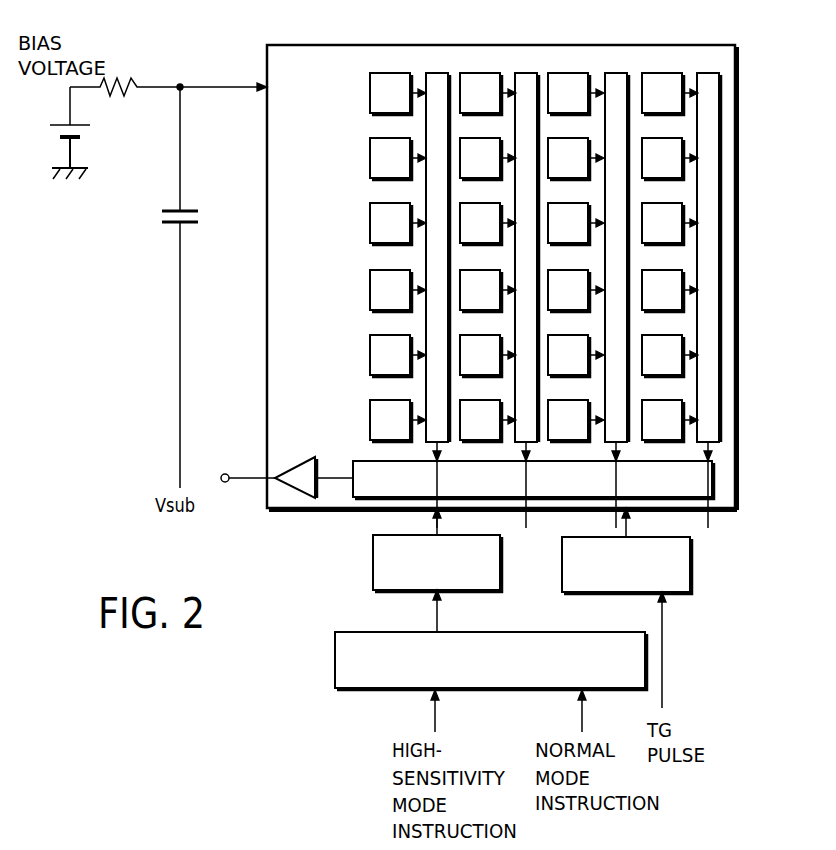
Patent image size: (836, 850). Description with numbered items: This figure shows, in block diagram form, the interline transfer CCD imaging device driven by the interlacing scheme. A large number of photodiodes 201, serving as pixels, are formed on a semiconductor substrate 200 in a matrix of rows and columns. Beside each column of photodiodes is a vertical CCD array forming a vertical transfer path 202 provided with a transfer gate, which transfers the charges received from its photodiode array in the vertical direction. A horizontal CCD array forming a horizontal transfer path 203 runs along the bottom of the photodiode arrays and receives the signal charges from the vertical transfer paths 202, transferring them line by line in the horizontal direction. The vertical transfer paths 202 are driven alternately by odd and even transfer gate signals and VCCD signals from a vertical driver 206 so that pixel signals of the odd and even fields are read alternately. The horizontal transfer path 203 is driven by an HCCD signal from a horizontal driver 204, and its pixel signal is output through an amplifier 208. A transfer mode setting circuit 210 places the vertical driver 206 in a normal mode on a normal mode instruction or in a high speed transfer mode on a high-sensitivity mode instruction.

The semiconductor substrate 200 is at (672, 46).
The photodiode 201 is at (370, 158).
The vertical transfer path 202 is at (438, 73).
The horizontal transfer path 203 is at (712, 478).
The horizontal driver 204 is at (690, 558).
The vertical driver 206 is at (373, 557).
The amplifier 208 is at (300, 468).
The transfer mode setting circuit 210 is at (335, 658).